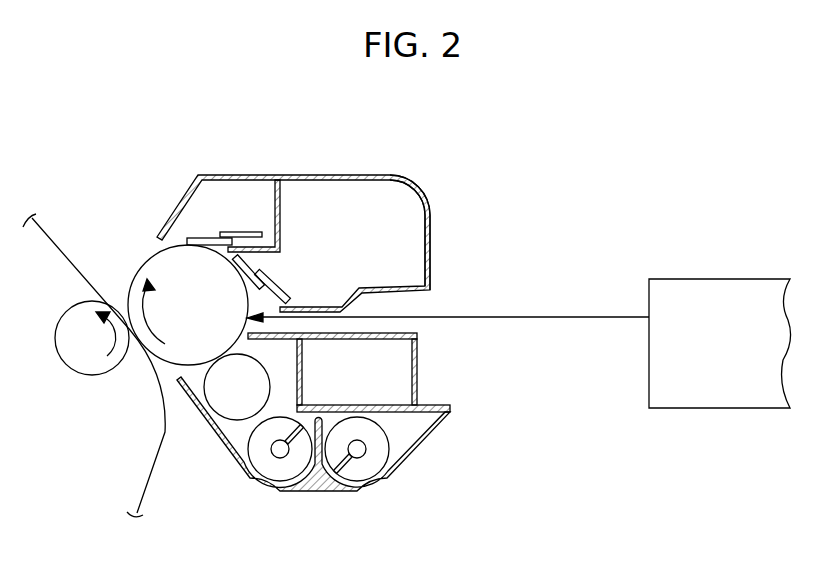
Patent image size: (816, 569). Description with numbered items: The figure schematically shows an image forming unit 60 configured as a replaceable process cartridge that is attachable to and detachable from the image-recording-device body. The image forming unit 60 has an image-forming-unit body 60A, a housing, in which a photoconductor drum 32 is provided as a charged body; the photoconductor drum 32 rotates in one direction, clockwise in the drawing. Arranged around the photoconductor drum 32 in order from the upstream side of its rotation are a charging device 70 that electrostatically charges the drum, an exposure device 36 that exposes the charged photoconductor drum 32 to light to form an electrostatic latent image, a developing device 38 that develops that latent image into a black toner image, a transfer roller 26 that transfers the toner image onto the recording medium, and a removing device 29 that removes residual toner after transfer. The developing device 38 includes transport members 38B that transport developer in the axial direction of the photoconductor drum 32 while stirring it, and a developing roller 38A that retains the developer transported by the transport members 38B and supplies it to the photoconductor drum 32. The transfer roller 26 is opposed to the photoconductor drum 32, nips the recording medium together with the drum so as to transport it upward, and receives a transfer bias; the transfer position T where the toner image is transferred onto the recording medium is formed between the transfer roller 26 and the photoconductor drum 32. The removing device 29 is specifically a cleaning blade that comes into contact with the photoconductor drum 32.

The transfer roller 26 is at (78, 363).
The transfer position T is at (136, 352).
The photoconductor drum 32 is at (152, 265).
The removing device 29 is at (207, 238).
The charging device 70 is at (278, 285).
The image forming unit 60 is at (398, 172).
The image-forming-unit body 60A is at (430, 263).
The exposure device 36 is at (708, 292).
The developing device 38 is at (432, 445).
The developing roller 38A is at (227, 403).
The transport members 38B is at (278, 467).